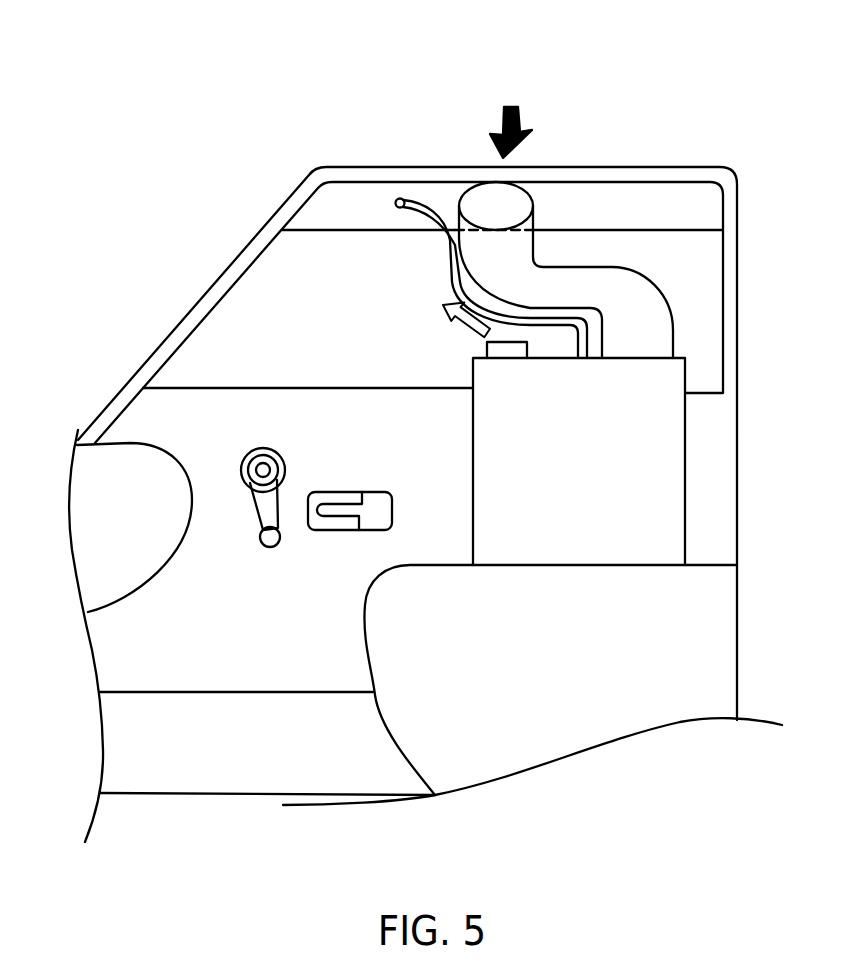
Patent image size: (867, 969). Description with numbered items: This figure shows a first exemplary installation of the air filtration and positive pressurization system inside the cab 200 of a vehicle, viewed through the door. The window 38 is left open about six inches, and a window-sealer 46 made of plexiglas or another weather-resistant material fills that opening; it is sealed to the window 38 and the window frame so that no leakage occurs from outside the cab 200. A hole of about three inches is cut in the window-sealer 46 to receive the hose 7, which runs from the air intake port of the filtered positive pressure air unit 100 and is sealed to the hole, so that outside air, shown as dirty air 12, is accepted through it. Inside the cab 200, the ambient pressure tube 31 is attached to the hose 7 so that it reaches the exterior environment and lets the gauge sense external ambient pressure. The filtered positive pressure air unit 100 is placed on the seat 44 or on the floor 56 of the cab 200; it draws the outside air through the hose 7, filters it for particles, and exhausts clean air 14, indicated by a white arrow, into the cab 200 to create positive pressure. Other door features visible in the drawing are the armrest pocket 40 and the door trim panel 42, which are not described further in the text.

The cab 200 is at (381, 66).
The dirty air 12 is at (518, 120).
The window-sealer 46 is at (636, 200).
The window 38 is at (262, 289).
The ambient pressure tube 31 is at (445, 245).
The hose 7 is at (648, 286).
The clean air 14 is at (440, 311).
The filtered positive pressure air unit 100 is at (685, 450).
The armrest pocket 40 is at (86, 518).
The door trim panel 42 is at (256, 680).
The seat 44 is at (566, 670).
The floor 56 is at (172, 796).